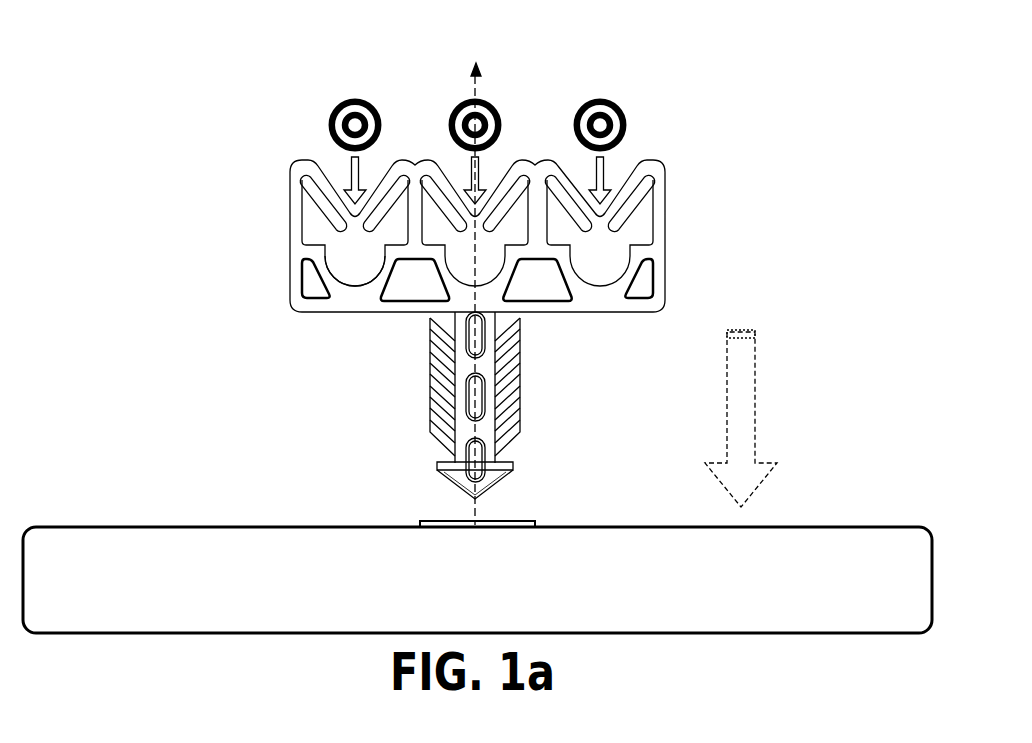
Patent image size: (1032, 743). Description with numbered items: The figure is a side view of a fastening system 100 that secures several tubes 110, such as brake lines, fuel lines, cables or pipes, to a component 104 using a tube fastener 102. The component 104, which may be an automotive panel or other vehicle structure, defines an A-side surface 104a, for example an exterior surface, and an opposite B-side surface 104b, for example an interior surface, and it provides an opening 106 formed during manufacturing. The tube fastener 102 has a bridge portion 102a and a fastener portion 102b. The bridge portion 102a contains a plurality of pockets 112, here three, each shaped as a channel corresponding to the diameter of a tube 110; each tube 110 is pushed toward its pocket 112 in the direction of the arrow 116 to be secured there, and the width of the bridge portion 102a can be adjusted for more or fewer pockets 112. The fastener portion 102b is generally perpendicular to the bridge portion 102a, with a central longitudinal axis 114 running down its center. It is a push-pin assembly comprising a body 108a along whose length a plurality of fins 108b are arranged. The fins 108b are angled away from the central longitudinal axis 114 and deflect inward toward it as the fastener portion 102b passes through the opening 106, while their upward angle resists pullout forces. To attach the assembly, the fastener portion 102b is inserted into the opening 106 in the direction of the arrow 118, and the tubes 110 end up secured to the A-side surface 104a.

The fastening system 100 is at (109, 195).
The tube fastener 102 is at (682, 132).
The bridge portion 102a is at (519, 254).
The fastener portion 102b is at (559, 405).
The component 104 is at (131, 490).
The A-side surface 104a is at (265, 525).
The B-side surface 104b is at (185, 633).
The opening 106 is at (423, 517).
The body 108a is at (510, 462).
The fins 108b is at (527, 370).
The tubes 110 is at (330, 122).
The pockets 112 is at (352, 268).
The central longitudinal axis 114 is at (472, 72).
The arrow 116 is at (590, 164).
The arrow 118 is at (760, 376).